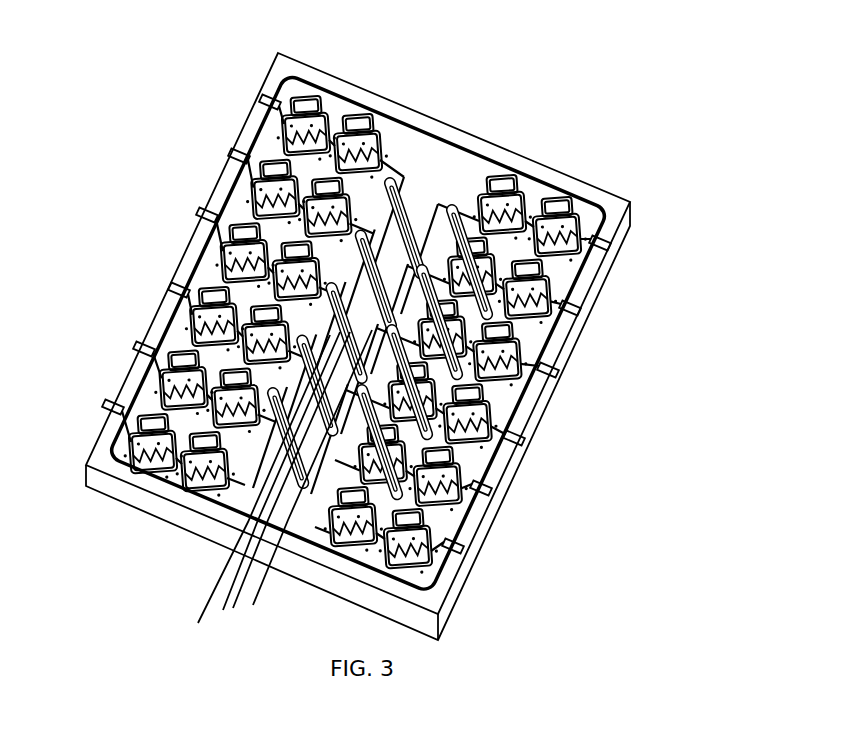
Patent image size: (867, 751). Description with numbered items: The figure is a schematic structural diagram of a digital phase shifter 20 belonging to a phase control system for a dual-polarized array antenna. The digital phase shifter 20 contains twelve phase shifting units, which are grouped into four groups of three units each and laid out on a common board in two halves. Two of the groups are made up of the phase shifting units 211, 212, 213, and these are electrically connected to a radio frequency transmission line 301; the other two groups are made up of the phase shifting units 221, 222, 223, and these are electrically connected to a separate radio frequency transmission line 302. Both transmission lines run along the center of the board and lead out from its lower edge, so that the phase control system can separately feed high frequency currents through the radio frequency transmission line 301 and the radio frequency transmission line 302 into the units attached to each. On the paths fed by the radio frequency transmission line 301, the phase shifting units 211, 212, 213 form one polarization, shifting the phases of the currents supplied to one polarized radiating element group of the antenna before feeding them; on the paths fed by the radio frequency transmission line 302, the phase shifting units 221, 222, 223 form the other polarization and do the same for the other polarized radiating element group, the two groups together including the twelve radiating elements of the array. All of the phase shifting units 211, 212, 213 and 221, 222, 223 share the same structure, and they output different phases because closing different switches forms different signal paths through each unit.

The digital phase shifter 20 is at (605, 53).
The phase shifting unit 211 is at (268, 102).
The phase shifting unit 212 is at (237, 156).
The phase shifting unit 213 is at (207, 215).
The phase shifting unit 221 is at (601, 246).
The phase shifting unit 222 is at (572, 308).
The phase shifting unit 223 is at (549, 370).
The radio frequency transmission line 301 is at (239, 482).
The radio frequency transmission line 302 is at (297, 486).